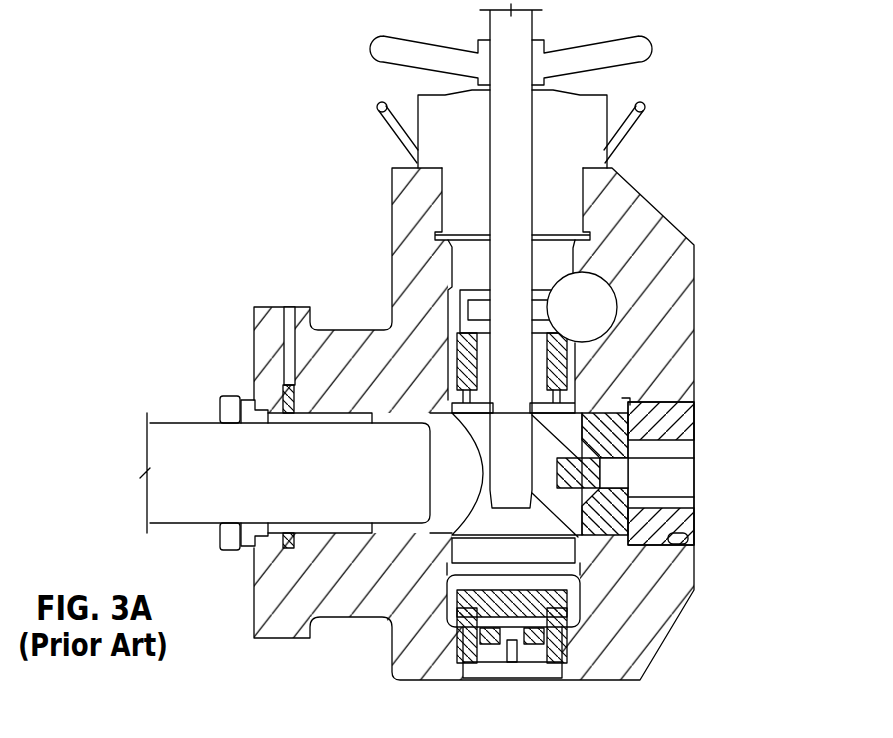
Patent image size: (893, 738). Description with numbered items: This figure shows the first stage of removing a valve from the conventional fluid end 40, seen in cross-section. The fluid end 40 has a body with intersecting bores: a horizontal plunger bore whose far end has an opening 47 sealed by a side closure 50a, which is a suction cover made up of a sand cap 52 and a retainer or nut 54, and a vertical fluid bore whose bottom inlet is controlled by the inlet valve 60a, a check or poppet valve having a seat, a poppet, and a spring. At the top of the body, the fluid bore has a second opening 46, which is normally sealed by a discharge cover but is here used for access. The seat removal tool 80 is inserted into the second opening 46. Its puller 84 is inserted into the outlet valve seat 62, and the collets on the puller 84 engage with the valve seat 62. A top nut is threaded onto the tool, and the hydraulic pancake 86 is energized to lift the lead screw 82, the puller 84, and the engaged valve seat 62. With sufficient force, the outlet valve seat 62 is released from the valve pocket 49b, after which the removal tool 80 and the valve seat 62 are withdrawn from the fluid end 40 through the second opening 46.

The fluid end 40 is at (392, 182).
The lead screw 82 is at (490, 21).
The seat removal tool 80 is at (565, 16).
The hydraulic pancake 86 is at (668, 85).
The opening 46 is at (582, 190).
The valve pocket 49b is at (467, 372).
The outlet valve seat 62 is at (567, 343).
The puller 84 is at (560, 397).
The side closure 50a is at (680, 476).
The retainer or nut 54 is at (696, 426).
The sand cap 52 is at (603, 478).
The opening 47 is at (690, 537).
The inlet valve 60a is at (575, 636).